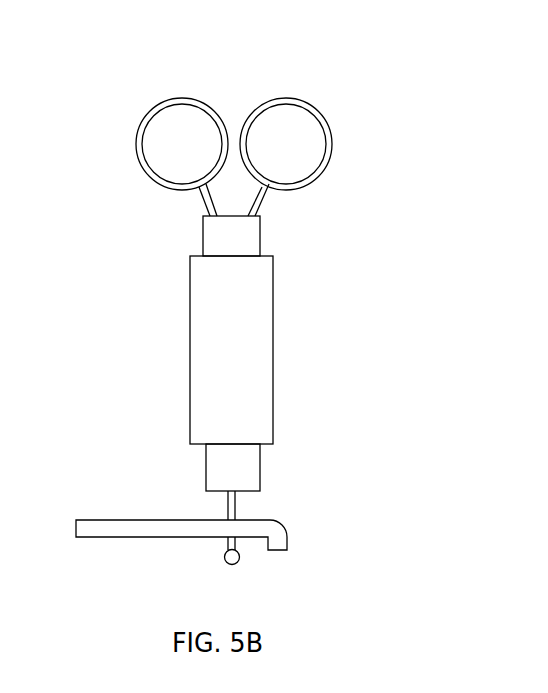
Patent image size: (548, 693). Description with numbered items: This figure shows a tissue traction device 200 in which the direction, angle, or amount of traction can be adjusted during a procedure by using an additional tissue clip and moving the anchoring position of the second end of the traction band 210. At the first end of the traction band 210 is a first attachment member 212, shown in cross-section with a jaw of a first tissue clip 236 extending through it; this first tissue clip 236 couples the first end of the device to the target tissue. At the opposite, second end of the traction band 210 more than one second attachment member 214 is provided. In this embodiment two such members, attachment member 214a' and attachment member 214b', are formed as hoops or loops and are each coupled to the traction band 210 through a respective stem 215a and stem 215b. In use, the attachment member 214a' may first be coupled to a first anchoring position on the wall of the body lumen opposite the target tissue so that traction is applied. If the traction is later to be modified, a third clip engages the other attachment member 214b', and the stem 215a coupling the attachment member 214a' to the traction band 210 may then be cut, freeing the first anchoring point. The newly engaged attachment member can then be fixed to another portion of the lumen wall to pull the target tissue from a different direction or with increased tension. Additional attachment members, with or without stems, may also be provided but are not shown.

The traction device 200 is at (235, 396).
The traction band 210 is at (203, 240).
The first attachment member 212 is at (236, 507).
The second attachment member 214 is at (235, 152).
The first attachment member 214a' is at (160, 120).
The second attachment member 214b' is at (320, 165).
The stem 215a is at (205, 203).
The stem 215b is at (265, 202).
The first tissue clip 236 is at (287, 540).